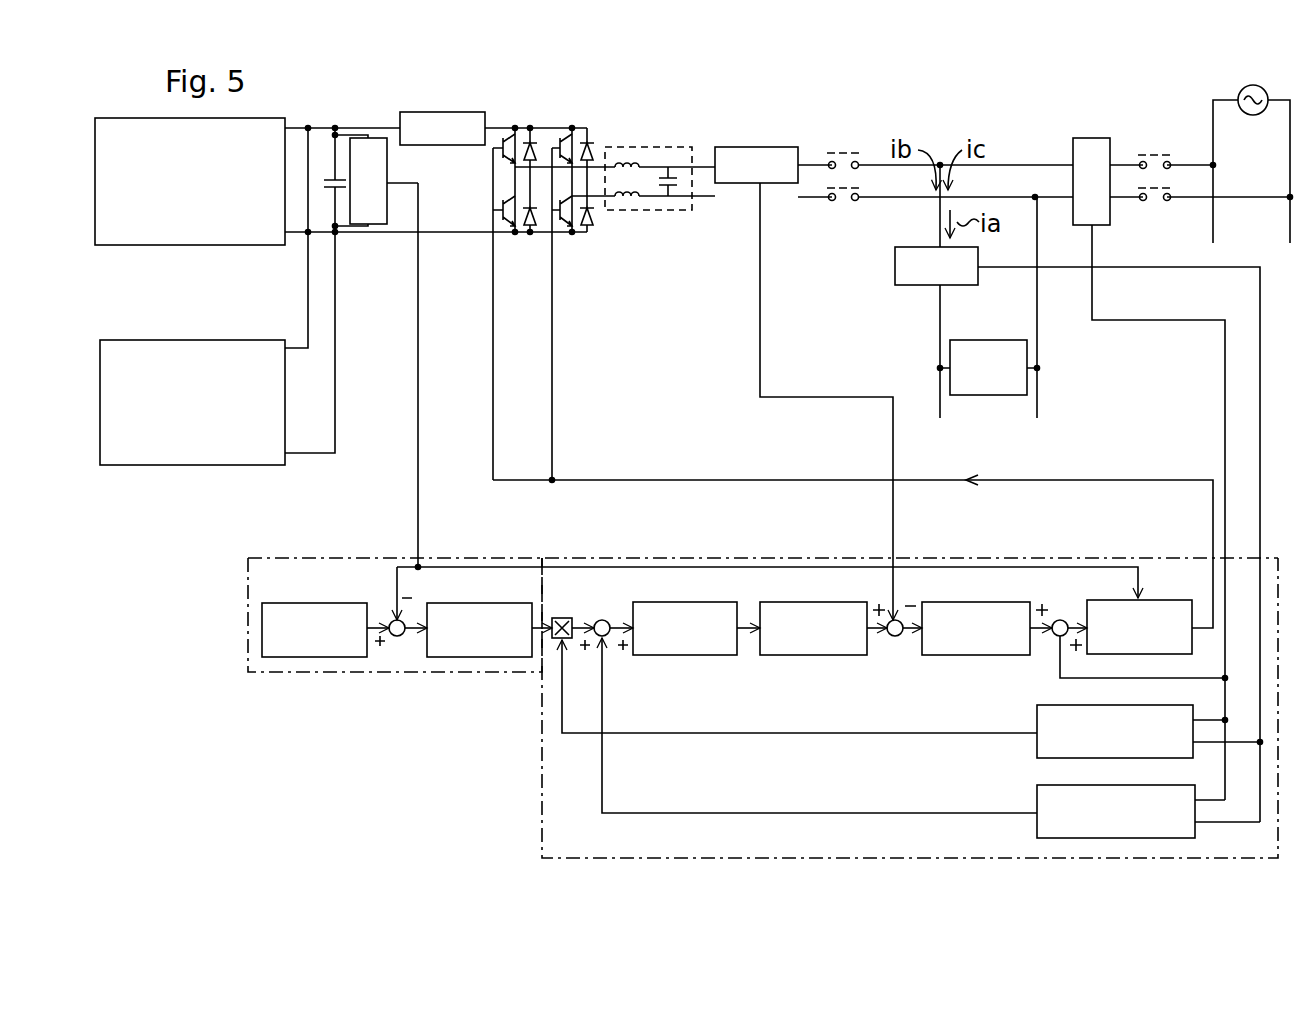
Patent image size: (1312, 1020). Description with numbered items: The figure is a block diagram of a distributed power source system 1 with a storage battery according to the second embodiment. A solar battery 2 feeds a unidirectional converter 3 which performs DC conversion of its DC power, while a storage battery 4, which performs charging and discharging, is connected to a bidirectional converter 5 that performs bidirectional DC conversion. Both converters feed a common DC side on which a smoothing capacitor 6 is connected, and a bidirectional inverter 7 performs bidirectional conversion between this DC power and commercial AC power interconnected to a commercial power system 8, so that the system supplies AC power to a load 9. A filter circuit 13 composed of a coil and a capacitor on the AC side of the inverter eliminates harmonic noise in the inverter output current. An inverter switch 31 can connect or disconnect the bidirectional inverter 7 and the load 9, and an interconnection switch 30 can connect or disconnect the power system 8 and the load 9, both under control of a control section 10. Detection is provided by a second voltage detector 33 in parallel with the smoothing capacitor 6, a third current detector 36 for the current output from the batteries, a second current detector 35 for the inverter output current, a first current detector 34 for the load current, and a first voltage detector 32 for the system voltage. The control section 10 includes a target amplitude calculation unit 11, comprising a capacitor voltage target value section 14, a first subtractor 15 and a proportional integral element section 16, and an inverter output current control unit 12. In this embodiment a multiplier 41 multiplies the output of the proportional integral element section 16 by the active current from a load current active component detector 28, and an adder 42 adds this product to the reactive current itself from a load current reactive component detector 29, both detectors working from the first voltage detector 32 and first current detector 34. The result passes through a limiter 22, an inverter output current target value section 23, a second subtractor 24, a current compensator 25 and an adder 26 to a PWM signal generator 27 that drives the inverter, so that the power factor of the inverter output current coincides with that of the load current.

The distributed power source system 1 is at (824, 136).
The solar battery 2 is at (112, 130).
The unidirectional converter 3 is at (259, 234).
The storage battery 4 is at (146, 350).
The bidirectional converter 5 is at (256, 464).
The smoothing capacitor 6 is at (328, 170).
The bidirectional inverter 7 is at (546, 126).
The commercial power system 8 is at (1236, 96).
The load 9 is at (990, 395).
The control section 10 is at (440, 732).
The target amplitude calculation unit 11 is at (290, 675).
The inverter output current control unit 12 is at (540, 770).
The filter circuit 13 is at (656, 147).
The capacitor voltage target value section 14 is at (317, 658).
The first subtractor 15 is at (398, 640).
The proportional integral element section 16 is at (480, 658).
The limiter 22 is at (654, 600).
The inverter output current target value section 23 is at (810, 600).
The second subtractor 24 is at (886, 610).
The current compensator 25 is at (970, 600).
The adder 26 is at (1062, 618).
The PWM signal generator 27 is at (1156, 598).
The load current active component detector 28 is at (1037, 746).
The load current reactive component detector 29 is at (1037, 830).
The interconnection switch 30 is at (1150, 152).
The inverter switch 31 is at (862, 150).
The first voltage detector 32 is at (1090, 138).
The second voltage detector 33 is at (370, 138).
The first current detector 34 is at (895, 262).
The second current detector 35 is at (754, 147).
The third current detector 36 is at (446, 112).
The multiplier 41 is at (560, 616).
The adder 42 is at (600, 620).